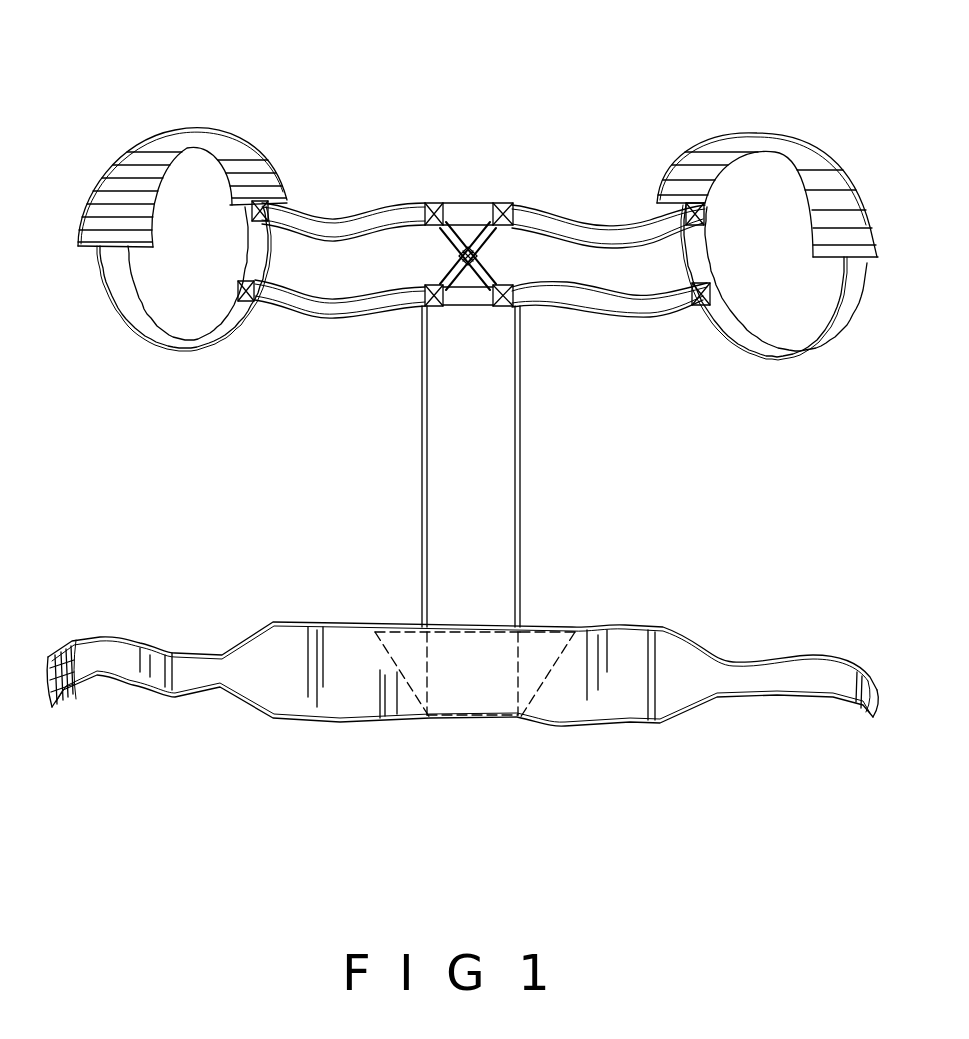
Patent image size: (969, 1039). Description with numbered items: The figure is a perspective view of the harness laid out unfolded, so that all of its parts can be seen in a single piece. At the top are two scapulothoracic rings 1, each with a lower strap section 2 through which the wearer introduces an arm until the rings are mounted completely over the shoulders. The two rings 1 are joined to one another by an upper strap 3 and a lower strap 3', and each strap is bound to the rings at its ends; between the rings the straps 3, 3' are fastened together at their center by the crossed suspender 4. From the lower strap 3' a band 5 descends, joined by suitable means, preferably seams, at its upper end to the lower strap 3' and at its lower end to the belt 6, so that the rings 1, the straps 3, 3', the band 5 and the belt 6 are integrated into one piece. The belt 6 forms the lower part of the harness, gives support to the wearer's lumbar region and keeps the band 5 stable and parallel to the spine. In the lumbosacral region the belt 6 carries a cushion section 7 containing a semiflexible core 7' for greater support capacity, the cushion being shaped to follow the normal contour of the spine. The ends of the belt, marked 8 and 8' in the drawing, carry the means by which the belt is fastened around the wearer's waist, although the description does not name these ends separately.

The scapulothoracic ring 1 is at (157, 160).
The lower strap section 2 is at (120, 303).
The upper strap 3 is at (483, 165).
The lower strap 3' is at (478, 366).
The crossed suspender 4 is at (460, 236).
The band 5 is at (497, 468).
The belt 6 is at (692, 645).
The cushion section 7 is at (427, 727).
The semiflexible core 7' is at (530, 729).
The right end of belt 8 is at (829, 756).
The left end of belt 8' is at (104, 629).